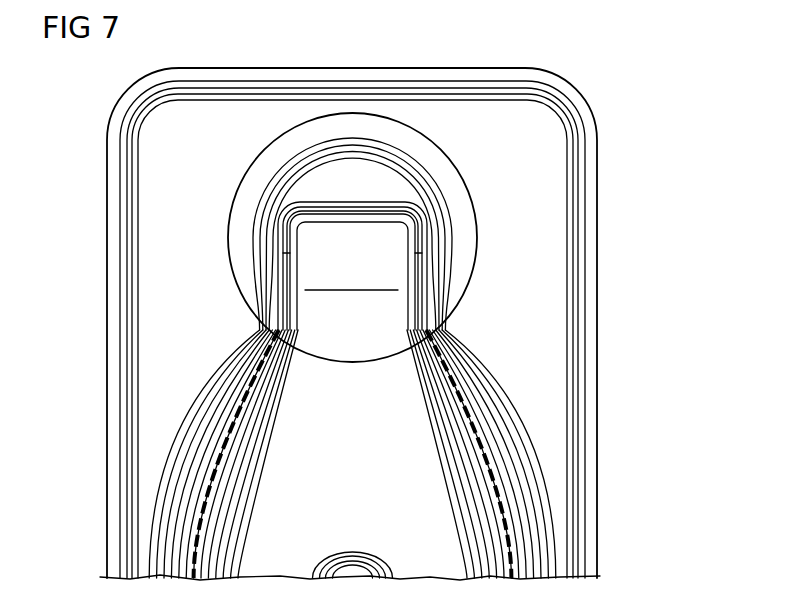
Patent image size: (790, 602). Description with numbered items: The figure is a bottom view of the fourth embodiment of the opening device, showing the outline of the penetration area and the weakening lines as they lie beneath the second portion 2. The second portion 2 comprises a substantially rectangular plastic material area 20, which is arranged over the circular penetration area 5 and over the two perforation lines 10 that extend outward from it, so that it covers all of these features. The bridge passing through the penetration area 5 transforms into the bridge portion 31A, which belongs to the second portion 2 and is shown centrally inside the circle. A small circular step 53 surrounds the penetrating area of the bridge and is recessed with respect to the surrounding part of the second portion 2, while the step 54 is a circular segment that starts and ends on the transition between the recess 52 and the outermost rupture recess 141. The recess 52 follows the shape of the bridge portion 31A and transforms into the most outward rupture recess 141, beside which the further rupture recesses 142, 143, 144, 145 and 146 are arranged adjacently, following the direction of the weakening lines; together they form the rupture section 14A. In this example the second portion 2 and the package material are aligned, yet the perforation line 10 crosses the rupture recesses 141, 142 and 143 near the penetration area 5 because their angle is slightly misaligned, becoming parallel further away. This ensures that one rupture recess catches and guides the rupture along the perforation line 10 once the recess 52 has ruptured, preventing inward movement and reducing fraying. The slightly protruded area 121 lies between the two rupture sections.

The second portion 2 is at (623, 148).
The rectangular plastic material area 20 is at (107, 192).
The penetration area 5 is at (238, 184).
The recess 52 is at (327, 210).
The circular step 53 is at (403, 182).
The step 54 is at (253, 245).
The bridge portion 31A is at (375, 268).
The perforation line 10 is at (230, 417).
The cable bundle 14A is at (499, 454).
The rupture recess 141 is at (472, 383).
The rupture recess 142 is at (477, 412).
The rupture recess 143 is at (490, 473).
The rupture recess 144 is at (433, 390).
The rupture recess 145 is at (457, 430).
The rupture recess 146 is at (465, 487).
The protruded area 121 is at (358, 513).